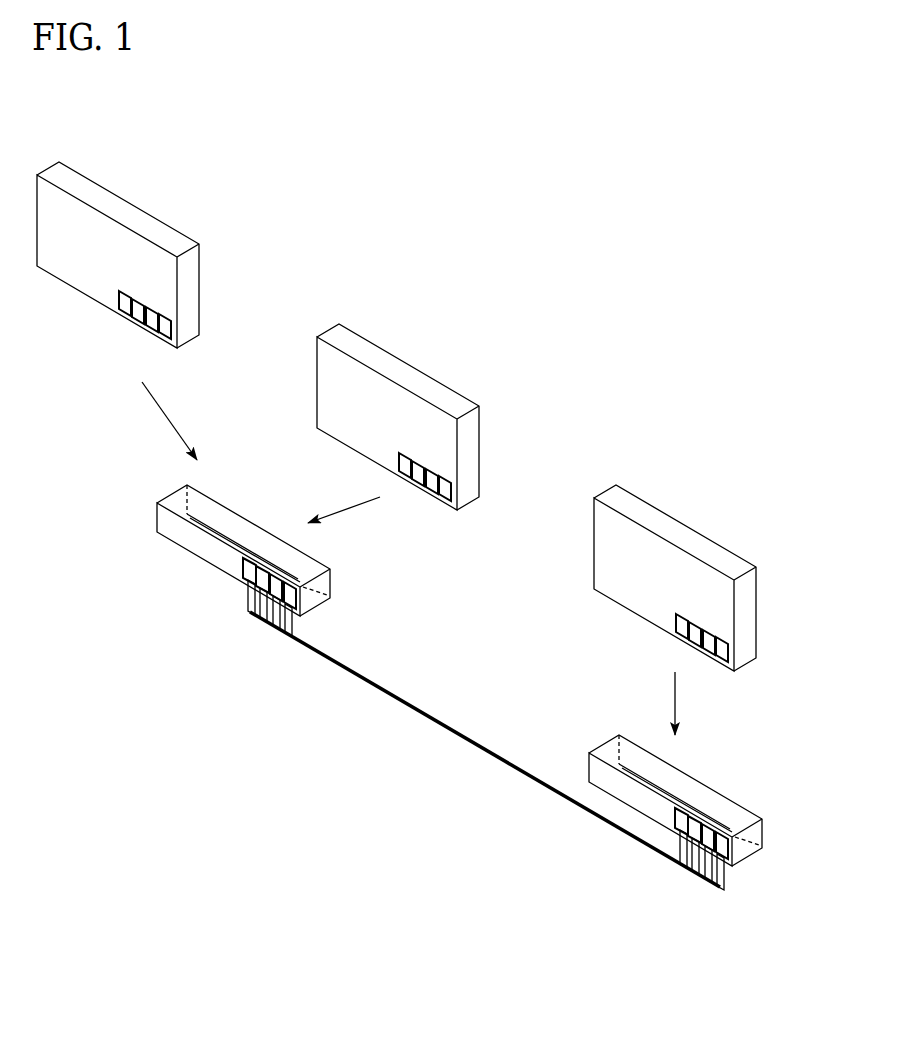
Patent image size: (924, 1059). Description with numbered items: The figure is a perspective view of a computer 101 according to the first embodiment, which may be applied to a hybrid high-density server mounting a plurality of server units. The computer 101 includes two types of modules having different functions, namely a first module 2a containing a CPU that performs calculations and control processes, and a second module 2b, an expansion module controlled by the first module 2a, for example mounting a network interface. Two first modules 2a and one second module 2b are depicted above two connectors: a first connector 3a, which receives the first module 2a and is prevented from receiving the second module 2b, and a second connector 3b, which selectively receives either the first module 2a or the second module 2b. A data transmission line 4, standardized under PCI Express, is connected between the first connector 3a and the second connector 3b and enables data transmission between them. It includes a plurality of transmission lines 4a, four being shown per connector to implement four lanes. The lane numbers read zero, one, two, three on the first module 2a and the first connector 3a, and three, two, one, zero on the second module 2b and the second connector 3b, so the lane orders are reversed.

The computer 101 is at (574, 170).
The first module 2a is at (400, 372).
The second module 2b is at (118, 208).
The first connector 3a is at (742, 845).
The second connector 3b is at (192, 540).
The data transmission line 4 is at (452, 733).
The transmission line 4a is at (248, 603).